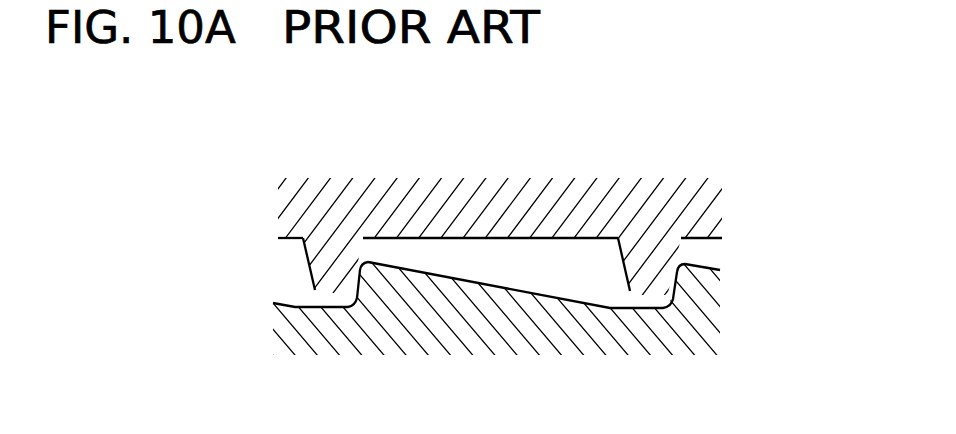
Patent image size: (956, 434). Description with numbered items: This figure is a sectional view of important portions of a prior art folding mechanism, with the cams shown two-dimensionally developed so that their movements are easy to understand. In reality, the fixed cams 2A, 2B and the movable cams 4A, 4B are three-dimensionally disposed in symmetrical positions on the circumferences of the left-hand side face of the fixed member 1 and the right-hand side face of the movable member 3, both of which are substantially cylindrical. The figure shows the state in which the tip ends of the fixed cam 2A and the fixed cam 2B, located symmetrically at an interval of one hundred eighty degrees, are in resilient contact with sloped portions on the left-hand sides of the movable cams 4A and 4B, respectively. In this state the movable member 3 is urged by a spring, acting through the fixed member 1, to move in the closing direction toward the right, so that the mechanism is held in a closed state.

The fixed member 1 is at (495, 189).
The fixed cam 2A is at (338, 260).
The fixed cam 2B is at (653, 270).
The movable member 3 is at (498, 335).
The movable cam 4A is at (377, 283).
The movable cam 4B is at (690, 277).